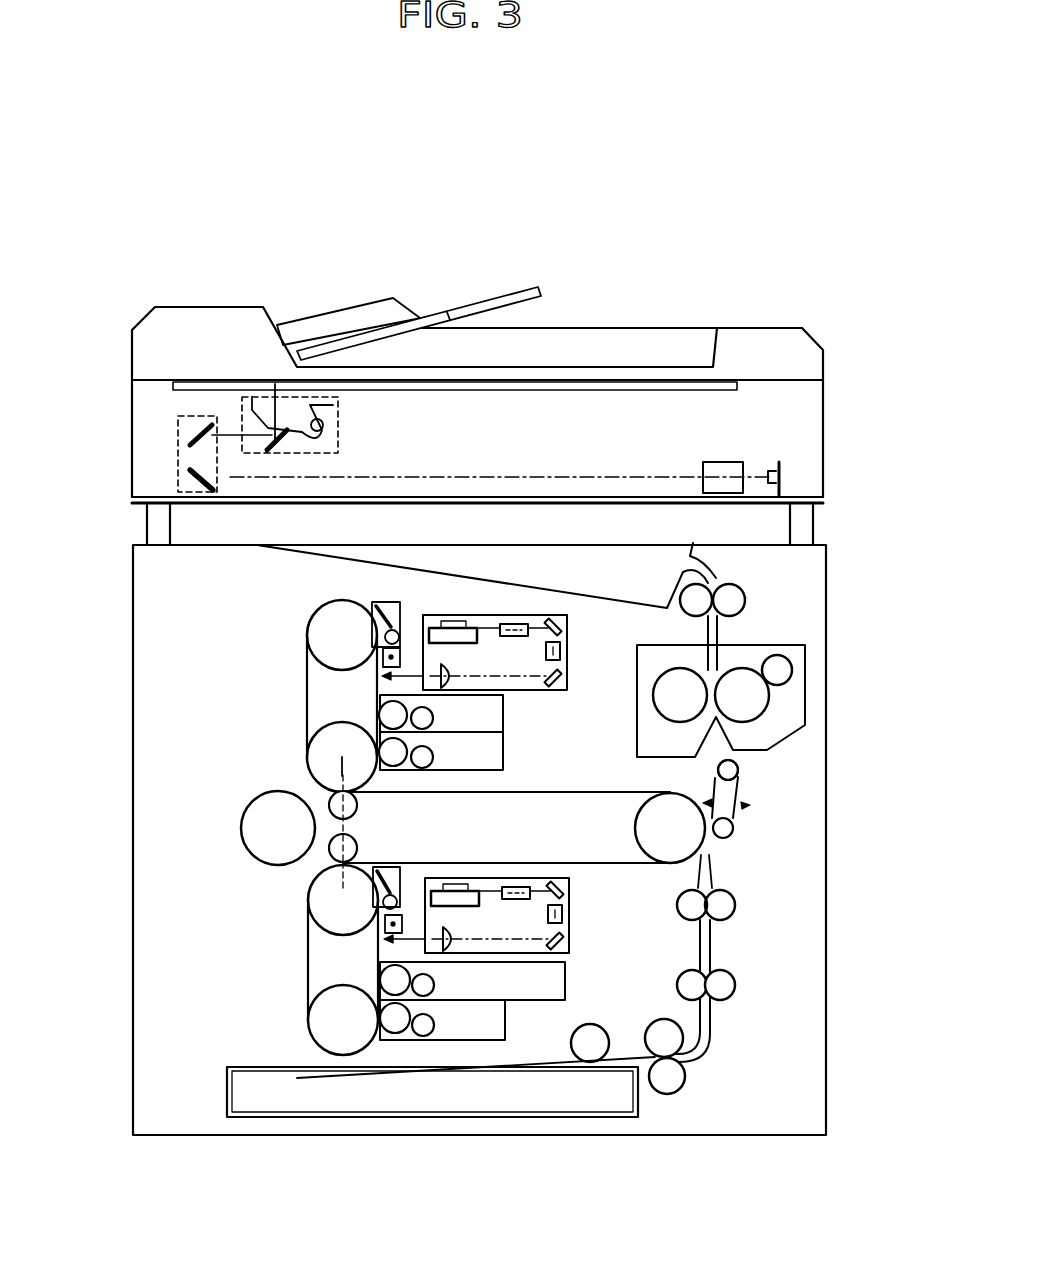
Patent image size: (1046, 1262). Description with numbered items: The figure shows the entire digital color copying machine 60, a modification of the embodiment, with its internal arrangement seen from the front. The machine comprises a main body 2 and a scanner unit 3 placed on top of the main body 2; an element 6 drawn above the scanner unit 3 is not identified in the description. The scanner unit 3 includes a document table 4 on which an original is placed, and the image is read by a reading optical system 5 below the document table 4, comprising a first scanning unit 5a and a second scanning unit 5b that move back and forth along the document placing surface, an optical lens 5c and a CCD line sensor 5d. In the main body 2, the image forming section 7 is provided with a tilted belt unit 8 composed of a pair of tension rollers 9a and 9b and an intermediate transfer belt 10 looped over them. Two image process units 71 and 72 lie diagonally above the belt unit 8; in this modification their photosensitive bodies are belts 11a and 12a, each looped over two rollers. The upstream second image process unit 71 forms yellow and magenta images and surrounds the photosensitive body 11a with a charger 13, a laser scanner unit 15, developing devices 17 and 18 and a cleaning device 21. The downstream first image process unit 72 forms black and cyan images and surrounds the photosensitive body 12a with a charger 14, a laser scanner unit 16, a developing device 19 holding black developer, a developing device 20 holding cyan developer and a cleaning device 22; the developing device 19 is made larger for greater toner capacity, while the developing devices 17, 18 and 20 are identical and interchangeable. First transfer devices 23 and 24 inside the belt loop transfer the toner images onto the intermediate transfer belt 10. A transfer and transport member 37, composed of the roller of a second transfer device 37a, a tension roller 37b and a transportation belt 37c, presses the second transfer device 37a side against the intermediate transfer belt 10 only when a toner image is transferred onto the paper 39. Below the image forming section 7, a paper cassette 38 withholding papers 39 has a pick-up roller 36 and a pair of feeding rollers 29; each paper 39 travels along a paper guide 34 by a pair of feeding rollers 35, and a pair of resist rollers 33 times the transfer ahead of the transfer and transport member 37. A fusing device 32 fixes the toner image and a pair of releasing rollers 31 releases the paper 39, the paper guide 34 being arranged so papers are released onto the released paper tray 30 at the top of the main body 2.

The digital color copying machine 60 is at (716, 198).
The automatic document feeder 6 is at (214, 302).
The document table 4 is at (676, 378).
The scanner unit 3 is at (837, 328).
The reading optical system 5 is at (157, 448).
The first scanning unit 5a is at (338, 425).
The second scanning unit 5b is at (217, 470).
The optical lens 5c is at (724, 462).
The CCD line sensor 5d is at (783, 470).
The main body 2 is at (840, 545).
The image forming section 7 is at (155, 668).
The second image process unit 71 is at (242, 640).
The first image process unit 72 is at (242, 979).
The photosensitive body belt 11a is at (307, 700).
The photosensitive body belt 12a is at (308, 958).
The cleaning device 21 is at (383, 602).
The cleaning device 22 is at (396, 870).
The charger 13 is at (401, 656).
The charger 14 is at (403, 924).
The laser scanner unit 15 is at (567, 655).
The laser scanner unit 16 is at (568, 920).
The developing device 17 is at (503, 716).
The developing device 18 is at (503, 753).
The developing device 19 is at (565, 980).
The developing device 20 is at (505, 1022).
The intermediate transfer belt 10 is at (600, 792).
The tension roller 9a is at (262, 860).
The tension roller 9b is at (652, 836).
The first transfer device 23 is at (329, 808).
The first transfer device 24 is at (329, 847).
The belt unit 8 is at (238, 868).
The released paper tray 30 is at (613, 598).
The releasing rollers 31 is at (746, 600).
The fusing device 32 is at (788, 738).
The transfer and transport member 37 is at (748, 797).
The second transfer device 37a is at (734, 836).
The tension roller 37b is at (738, 770).
The transportation belt 37c is at (716, 780).
The resist rollers 33 is at (737, 905).
The paper guide 34 is at (712, 1030).
The feeding rollers 35 is at (737, 985).
The pick-up roller 36 is at (590, 1024).
The paper 39 is at (625, 1058).
The feeding rollers 29 is at (684, 1085).
The paper cassette 38 is at (597, 1117).